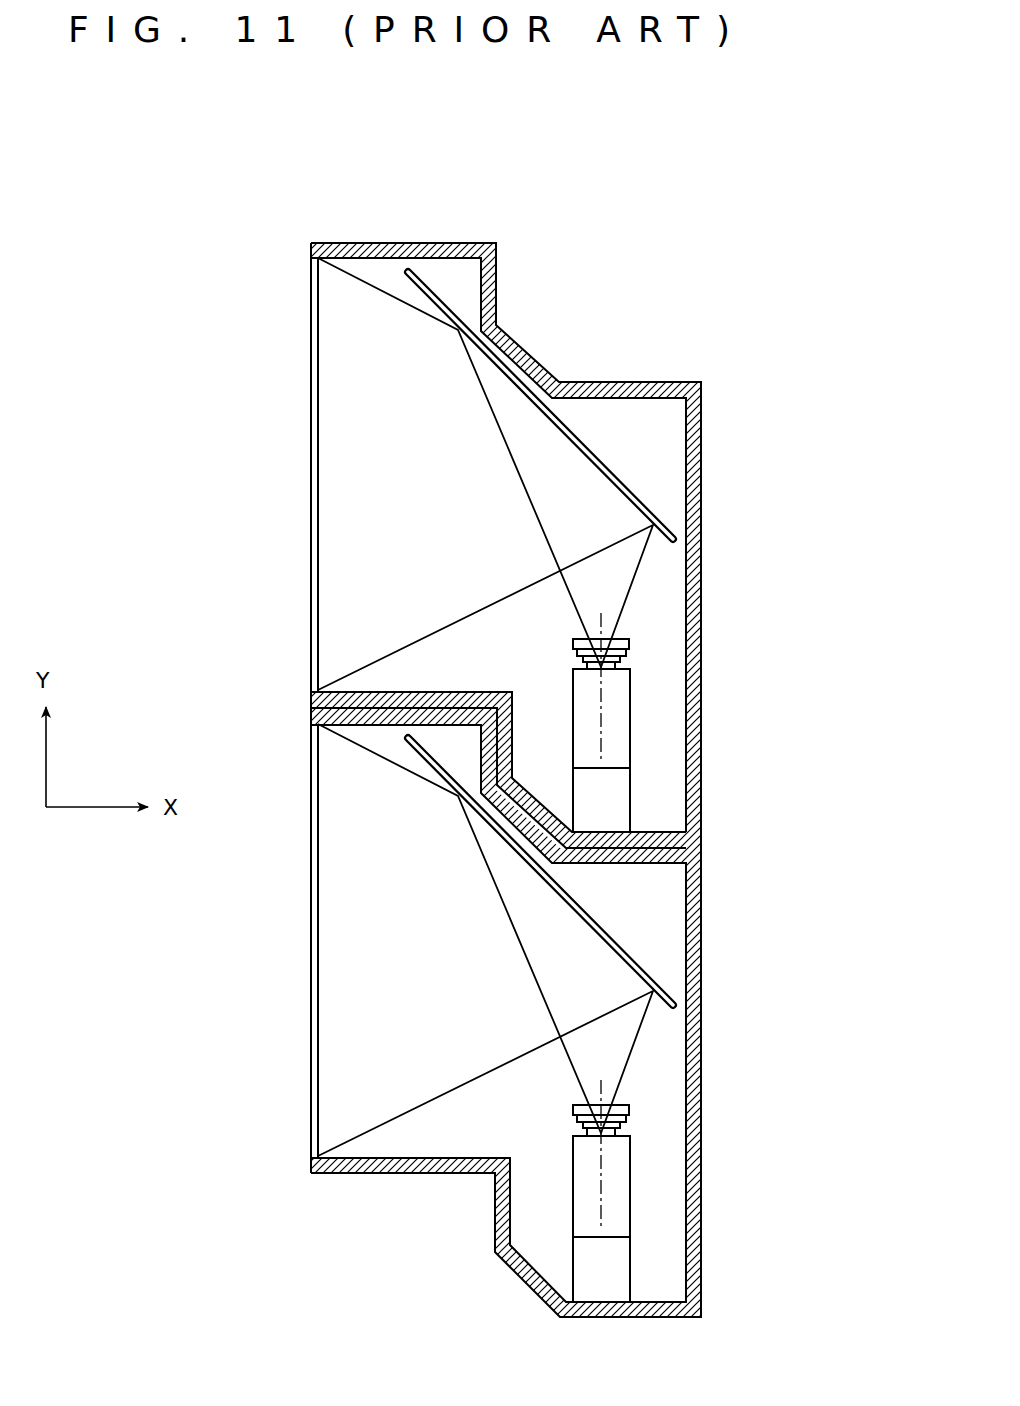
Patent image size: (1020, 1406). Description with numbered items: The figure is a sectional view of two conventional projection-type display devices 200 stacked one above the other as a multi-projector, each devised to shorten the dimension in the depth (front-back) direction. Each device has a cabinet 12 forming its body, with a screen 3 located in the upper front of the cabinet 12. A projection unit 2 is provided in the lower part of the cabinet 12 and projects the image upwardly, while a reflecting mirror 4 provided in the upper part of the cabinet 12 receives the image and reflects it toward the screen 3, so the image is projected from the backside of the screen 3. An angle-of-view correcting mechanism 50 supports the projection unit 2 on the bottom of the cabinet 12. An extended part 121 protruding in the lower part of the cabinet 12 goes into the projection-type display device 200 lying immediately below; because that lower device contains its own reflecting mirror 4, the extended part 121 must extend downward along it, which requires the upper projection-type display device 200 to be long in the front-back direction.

The cabinet 12 is at (700, 390).
The screen 3 is at (311, 490).
The reflecting mirror 4 is at (643, 502).
The projection unit 2 is at (632, 717).
The angle-of-view correcting mechanism 50 is at (632, 780).
The extended part 121 is at (652, 819).
The projection-type display device 200 is at (750, 523).